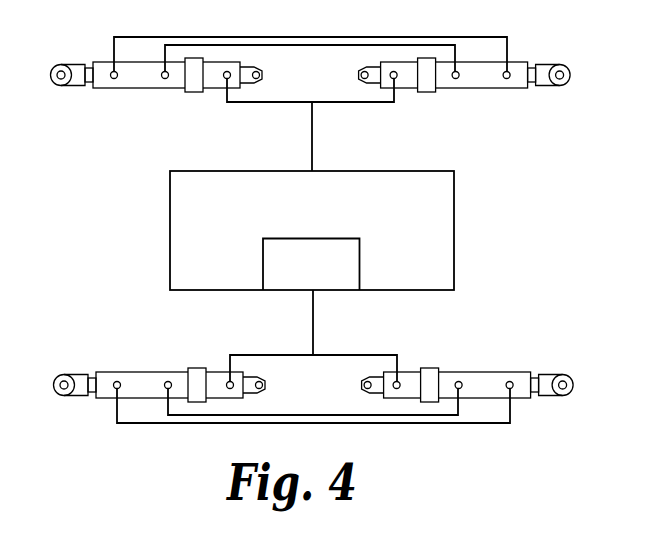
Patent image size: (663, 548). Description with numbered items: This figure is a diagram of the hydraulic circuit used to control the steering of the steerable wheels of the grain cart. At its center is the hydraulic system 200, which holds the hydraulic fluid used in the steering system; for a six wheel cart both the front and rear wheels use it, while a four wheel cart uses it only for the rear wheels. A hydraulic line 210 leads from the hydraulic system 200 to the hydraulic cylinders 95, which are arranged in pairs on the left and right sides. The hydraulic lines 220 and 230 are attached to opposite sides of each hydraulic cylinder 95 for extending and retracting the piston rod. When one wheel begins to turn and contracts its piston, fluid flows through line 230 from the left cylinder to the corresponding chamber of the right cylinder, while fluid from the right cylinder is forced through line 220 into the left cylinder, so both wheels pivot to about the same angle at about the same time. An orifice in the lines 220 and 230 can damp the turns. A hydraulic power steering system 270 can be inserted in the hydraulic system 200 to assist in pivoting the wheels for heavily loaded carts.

The hydraulic cylinder 95 is at (147, 90).
The hydraulic system 200 is at (428, 216).
The hydraulic line 210 is at (312, 126).
The hydraulic line 220 is at (481, 36).
The hydraulic line 230 is at (342, 46).
The hydraulic power steering system 270 is at (333, 274).